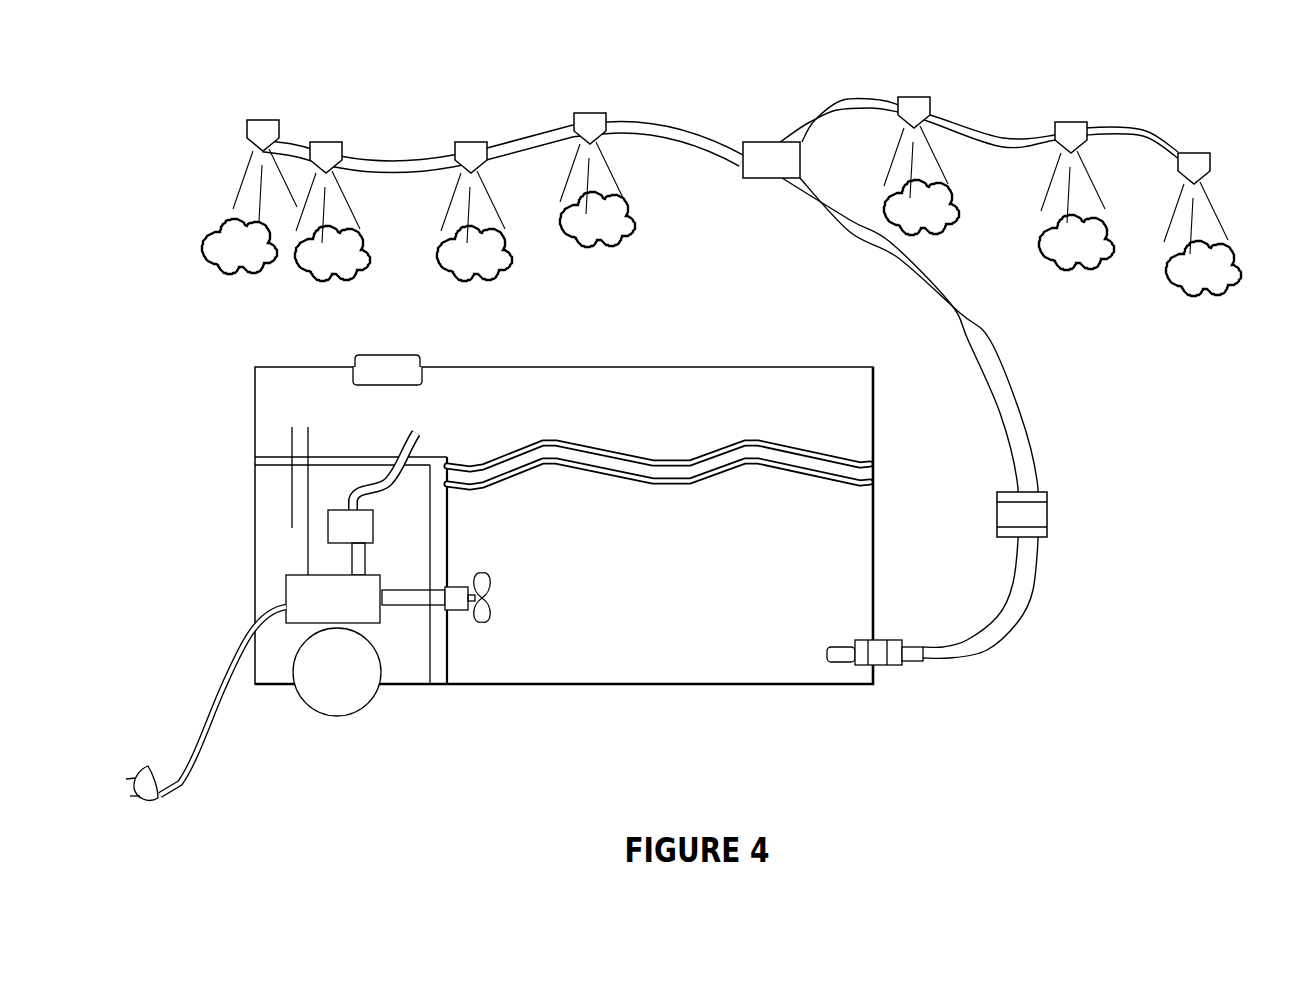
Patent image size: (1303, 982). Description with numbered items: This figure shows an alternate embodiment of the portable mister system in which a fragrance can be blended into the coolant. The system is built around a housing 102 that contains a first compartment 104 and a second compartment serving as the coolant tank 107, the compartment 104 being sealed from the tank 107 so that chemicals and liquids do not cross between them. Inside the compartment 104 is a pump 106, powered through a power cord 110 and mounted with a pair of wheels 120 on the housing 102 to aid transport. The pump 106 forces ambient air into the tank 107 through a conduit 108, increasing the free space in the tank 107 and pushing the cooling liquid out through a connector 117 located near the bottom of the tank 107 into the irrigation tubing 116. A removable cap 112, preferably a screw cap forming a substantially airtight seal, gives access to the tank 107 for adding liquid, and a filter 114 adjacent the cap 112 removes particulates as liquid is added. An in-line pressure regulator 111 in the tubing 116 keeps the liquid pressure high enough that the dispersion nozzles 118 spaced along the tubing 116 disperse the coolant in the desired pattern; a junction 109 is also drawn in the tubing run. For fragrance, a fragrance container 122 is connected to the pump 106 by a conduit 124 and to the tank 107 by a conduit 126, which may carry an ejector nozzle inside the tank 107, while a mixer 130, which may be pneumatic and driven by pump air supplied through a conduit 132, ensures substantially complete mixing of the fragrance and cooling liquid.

The housing 102 is at (654, 365).
The compartment 104 is at (411, 677).
The pump 106 is at (300, 609).
The coolant tank 107 is at (838, 515).
The conduit 108 is at (286, 496).
The distribution junction 109 is at (757, 139).
The power cord 110 is at (209, 742).
The pressure regulator 111 is at (1041, 506).
The removable cap 112 is at (402, 346).
The filter 114 is at (430, 372).
The tubing 116 is at (851, 238).
The connector 117 is at (889, 636).
The dispersion nozzles 118 is at (258, 118).
The wheels 120 is at (349, 722).
The fragrance container 122 is at (374, 518).
The conduit 124 is at (371, 557).
The conduit 126 is at (376, 486).
The mixer 130 is at (483, 566).
The conduit 132 is at (408, 608).